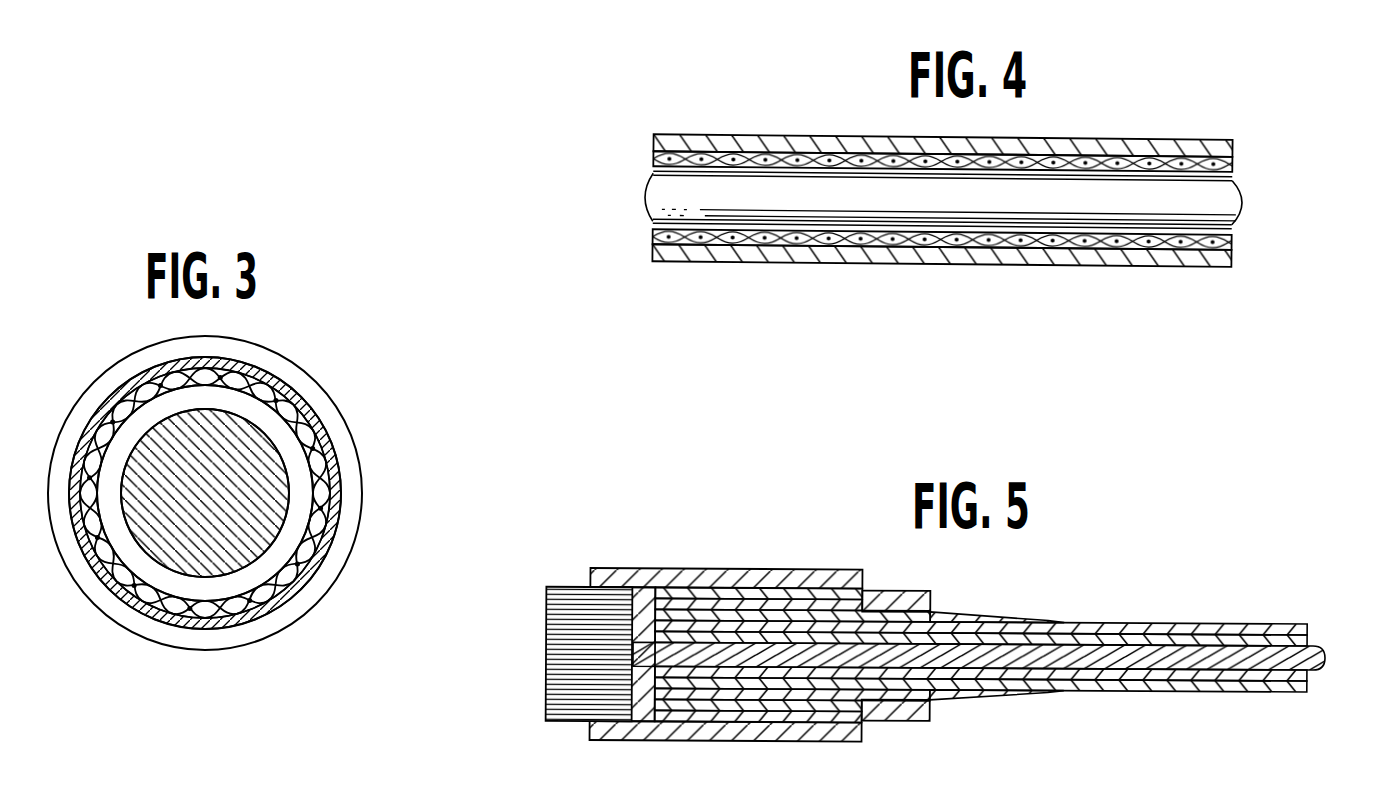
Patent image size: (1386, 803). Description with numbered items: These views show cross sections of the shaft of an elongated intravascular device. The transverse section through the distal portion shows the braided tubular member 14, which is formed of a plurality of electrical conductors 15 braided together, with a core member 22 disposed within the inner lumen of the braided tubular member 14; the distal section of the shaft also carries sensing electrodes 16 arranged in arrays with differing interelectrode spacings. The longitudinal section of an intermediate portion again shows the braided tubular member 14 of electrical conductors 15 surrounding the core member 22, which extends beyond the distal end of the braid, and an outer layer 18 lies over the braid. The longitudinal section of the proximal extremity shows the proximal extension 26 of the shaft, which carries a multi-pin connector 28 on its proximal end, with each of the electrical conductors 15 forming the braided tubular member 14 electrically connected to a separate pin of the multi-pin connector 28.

In FIG. 3, the braided tubular member 14 is at (113, 573).
In FIG. 4, the braided tubular member 14 is at (1140, 153).
In FIG. 5, the braided tubular member 14 is at (1318, 651).
In FIG. 3, the electrical conductors 15 is at (178, 378).
In FIG. 3, the sensing electrodes 16 is at (270, 378).
In FIG. 4, the outer jacket 18 is at (780, 137).
In FIG. 3, the core member 22 is at (270, 490).
In FIG. 4, the core member 22 is at (685, 194).
In FIG. 5, the core member 22 is at (979, 656).
In FIG. 5, the proximal extension 26 is at (1068, 622).
In FIG. 5, the multi-pin connector 28 is at (569, 580).